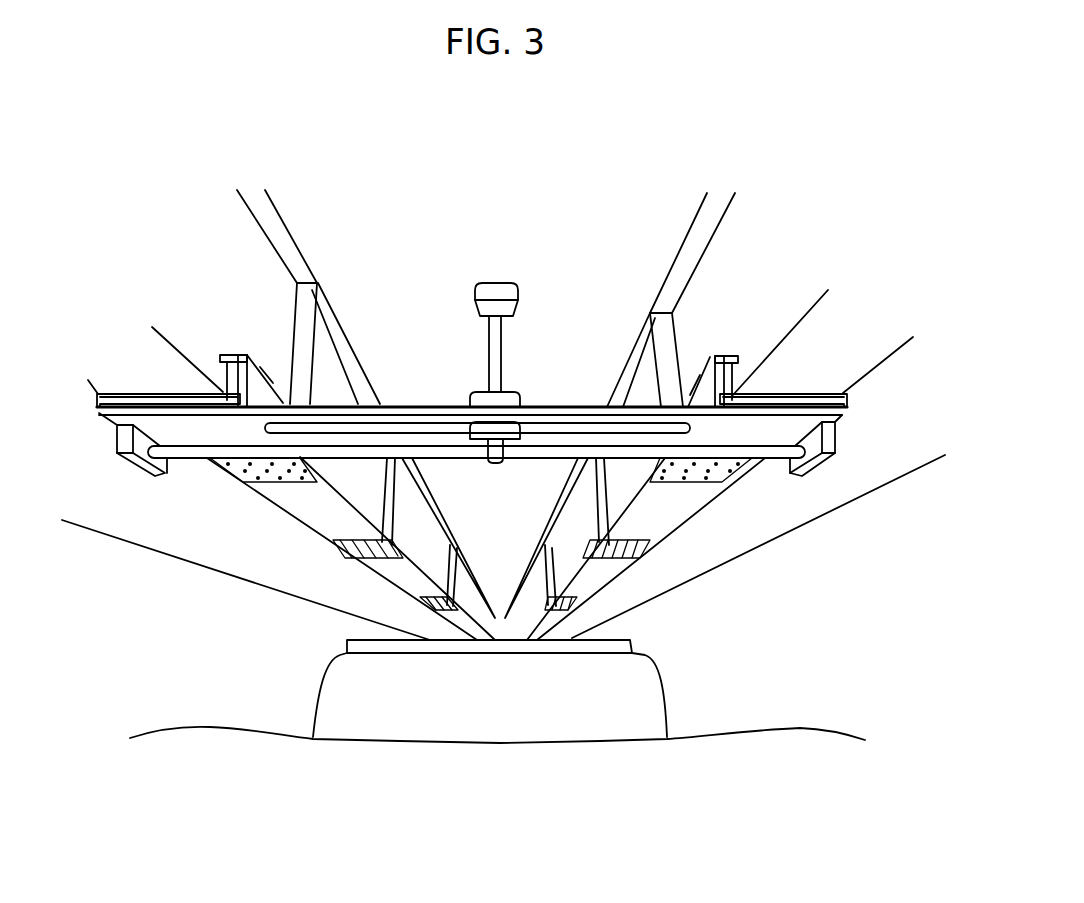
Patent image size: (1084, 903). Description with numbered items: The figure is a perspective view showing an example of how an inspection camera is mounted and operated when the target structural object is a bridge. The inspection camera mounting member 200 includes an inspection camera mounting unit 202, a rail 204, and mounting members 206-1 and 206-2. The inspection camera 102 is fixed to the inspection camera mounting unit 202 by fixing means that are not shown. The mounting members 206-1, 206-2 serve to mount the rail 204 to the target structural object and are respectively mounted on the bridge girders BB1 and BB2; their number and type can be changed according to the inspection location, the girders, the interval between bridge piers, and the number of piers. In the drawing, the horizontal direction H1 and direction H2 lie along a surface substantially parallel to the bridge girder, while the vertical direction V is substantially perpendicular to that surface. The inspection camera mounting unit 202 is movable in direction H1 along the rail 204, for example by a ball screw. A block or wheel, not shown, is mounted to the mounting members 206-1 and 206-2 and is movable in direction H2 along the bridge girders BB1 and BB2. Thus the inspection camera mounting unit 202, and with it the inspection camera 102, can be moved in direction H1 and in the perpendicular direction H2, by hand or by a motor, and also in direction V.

The inspection camera 102 is at (500, 282).
The inspection camera mounting unit 202 is at (486, 332).
The inspection camera mounting member 200 is at (875, 321).
The rail 204 is at (513, 560).
The mounting member 206-1 is at (108, 428).
The mounting member 206-2 is at (852, 408).
The bridge girder BB1 is at (140, 307).
The bridge girder BB2 is at (815, 276).
The direction H1 is at (462, 468).
The direction H2 is at (110, 350).
The direction V is at (512, 327).